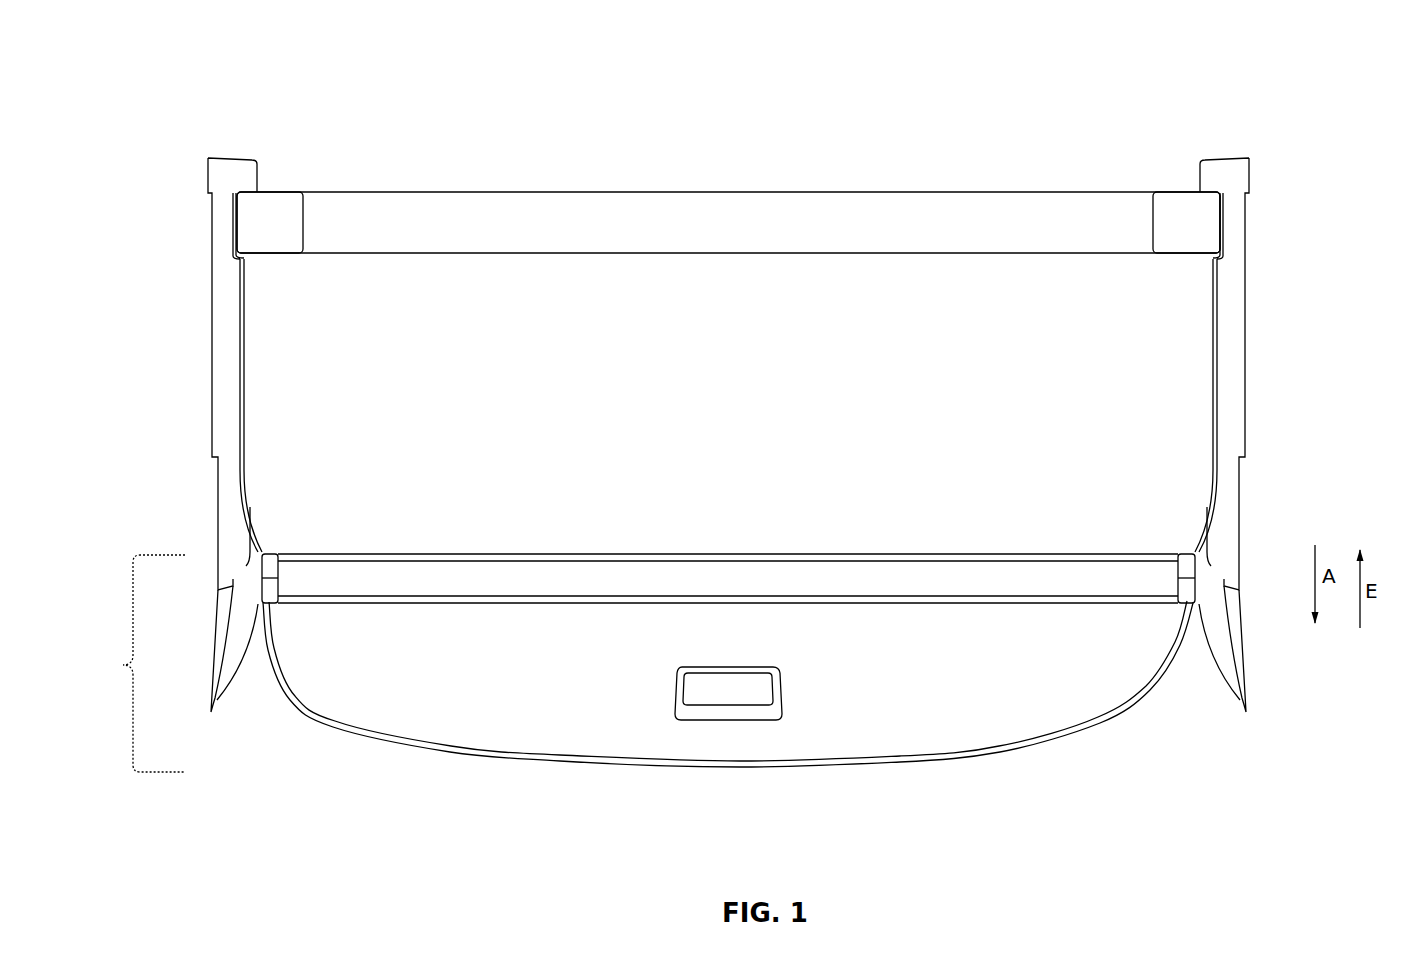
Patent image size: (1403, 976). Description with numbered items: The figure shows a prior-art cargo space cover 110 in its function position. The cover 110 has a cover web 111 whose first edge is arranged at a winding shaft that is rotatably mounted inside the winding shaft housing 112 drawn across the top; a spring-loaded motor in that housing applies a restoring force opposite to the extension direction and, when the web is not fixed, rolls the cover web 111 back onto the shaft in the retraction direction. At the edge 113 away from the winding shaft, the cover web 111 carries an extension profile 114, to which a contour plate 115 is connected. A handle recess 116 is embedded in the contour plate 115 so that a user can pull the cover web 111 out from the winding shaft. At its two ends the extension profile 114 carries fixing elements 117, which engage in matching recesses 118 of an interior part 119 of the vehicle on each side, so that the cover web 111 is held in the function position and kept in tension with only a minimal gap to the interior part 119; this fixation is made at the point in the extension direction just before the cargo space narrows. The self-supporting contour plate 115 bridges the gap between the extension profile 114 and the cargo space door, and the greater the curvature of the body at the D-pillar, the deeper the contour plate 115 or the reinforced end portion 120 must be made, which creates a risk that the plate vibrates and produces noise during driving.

The cargo space cover 110 is at (1023, 120).
The cover web 111 is at (689, 397).
The winding shaft housing 112 is at (606, 217).
The edge 113 is at (928, 565).
The extension profile 114 is at (986, 590).
The contour plate 115 is at (1070, 686).
The handle recess 116 is at (729, 695).
The fixing element 117 is at (257, 593).
The recess 118 is at (263, 547).
The interior part 119 is at (206, 292).
The reinforced end portion 120 is at (129, 663).